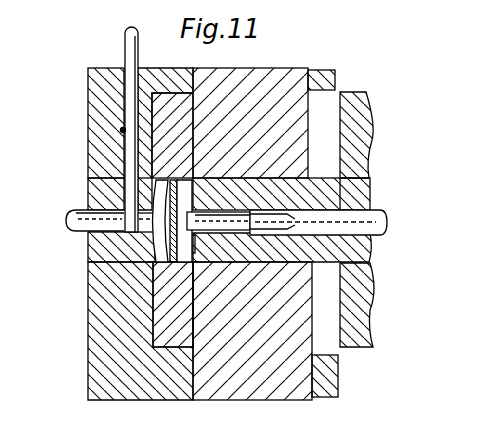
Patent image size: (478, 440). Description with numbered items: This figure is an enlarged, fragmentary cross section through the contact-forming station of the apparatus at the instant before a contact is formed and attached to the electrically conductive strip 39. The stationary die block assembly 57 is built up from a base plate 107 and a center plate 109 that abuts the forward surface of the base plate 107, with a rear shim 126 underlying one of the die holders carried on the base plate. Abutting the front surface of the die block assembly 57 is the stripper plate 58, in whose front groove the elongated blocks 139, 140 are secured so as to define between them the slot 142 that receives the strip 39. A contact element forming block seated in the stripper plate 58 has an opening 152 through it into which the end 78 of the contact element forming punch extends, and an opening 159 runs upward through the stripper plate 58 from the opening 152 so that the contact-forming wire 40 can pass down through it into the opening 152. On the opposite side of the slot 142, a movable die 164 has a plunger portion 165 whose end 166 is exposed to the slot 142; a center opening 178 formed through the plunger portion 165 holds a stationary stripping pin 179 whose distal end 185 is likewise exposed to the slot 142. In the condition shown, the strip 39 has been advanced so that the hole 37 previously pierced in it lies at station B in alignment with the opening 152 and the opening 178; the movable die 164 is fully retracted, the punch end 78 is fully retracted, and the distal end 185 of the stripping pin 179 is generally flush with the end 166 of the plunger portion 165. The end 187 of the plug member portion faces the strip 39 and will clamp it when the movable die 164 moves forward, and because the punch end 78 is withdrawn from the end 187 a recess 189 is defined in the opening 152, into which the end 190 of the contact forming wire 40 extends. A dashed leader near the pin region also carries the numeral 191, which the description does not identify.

The hole 37 is at (175, 178).
The strip 39 is at (200, 262).
The contact-forming wire 40 is at (128, 47).
The stationary die block assembly 57 is at (313, 66).
The stripper plate 58 is at (97, 97).
The end of contact element forming punch 78 is at (86, 214).
The base plate 107 is at (337, 75).
The center plate 109 is at (270, 90).
The rear shim 126 is at (326, 374).
The elongated block 139 is at (168, 112).
The elongated block 140 is at (173, 335).
The slot 142 is at (153, 305).
The opening 152 is at (145, 236).
The opening 159 is at (121, 130).
The movable die 164 is at (386, 166).
The plunger portion 165 is at (233, 202).
The end of plunger portion 166 is at (228, 256).
The center opening 178 is at (338, 188).
The stationary stripping pin 179 is at (368, 220).
The distal end of stripping pin 185 is at (247, 237).
The end of plug member portion 187 is at (157, 262).
The recess 189 is at (160, 256).
The end of contact forming wire 190 is at (127, 214).
The pin axis 191 is at (62, 232).